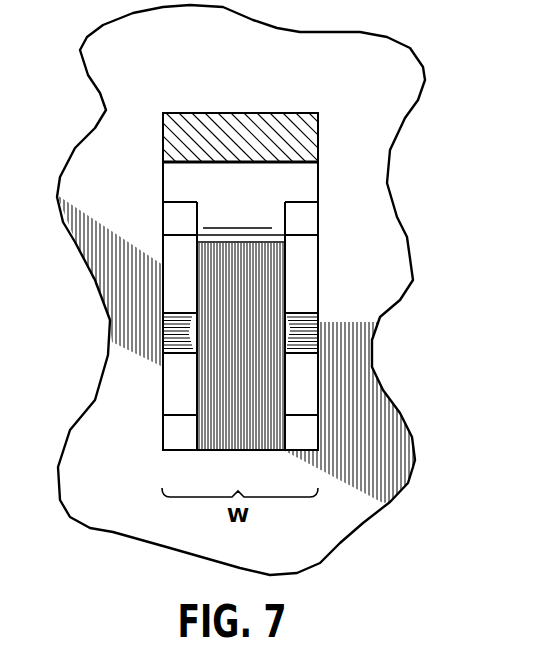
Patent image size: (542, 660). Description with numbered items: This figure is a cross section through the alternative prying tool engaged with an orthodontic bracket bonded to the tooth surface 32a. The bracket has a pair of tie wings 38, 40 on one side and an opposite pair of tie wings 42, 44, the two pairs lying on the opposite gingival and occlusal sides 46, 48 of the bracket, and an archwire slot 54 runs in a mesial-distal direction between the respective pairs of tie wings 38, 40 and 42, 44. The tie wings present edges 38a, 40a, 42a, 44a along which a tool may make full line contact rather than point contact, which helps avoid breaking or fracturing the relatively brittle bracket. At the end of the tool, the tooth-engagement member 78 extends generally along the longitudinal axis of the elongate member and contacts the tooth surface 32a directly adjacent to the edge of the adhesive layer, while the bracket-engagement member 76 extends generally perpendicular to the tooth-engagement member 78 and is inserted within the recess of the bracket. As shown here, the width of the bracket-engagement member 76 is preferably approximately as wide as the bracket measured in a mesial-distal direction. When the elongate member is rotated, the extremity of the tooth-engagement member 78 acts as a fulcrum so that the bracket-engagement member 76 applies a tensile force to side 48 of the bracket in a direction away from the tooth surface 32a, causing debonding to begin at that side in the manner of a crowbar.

The tooth surface 32a is at (353, 139).
The occlusal side 48 is at (153, 159).
The tooth-engagement member 78 is at (270, 113).
The bracket-engagement member 76 is at (222, 218).
The tie wing 38 is at (174, 222).
The edge of tie wing 38a is at (174, 200).
The tie wing 40 is at (300, 218).
The edge of tie wing 40a is at (297, 200).
The archwire slot 54 is at (176, 340).
The tie wing 42 is at (175, 427).
The edge of tie wing 42a is at (183, 450).
The tie wing 44 is at (305, 427).
The edge of tie wing 44a is at (300, 451).
The gingival side 46 is at (153, 475).